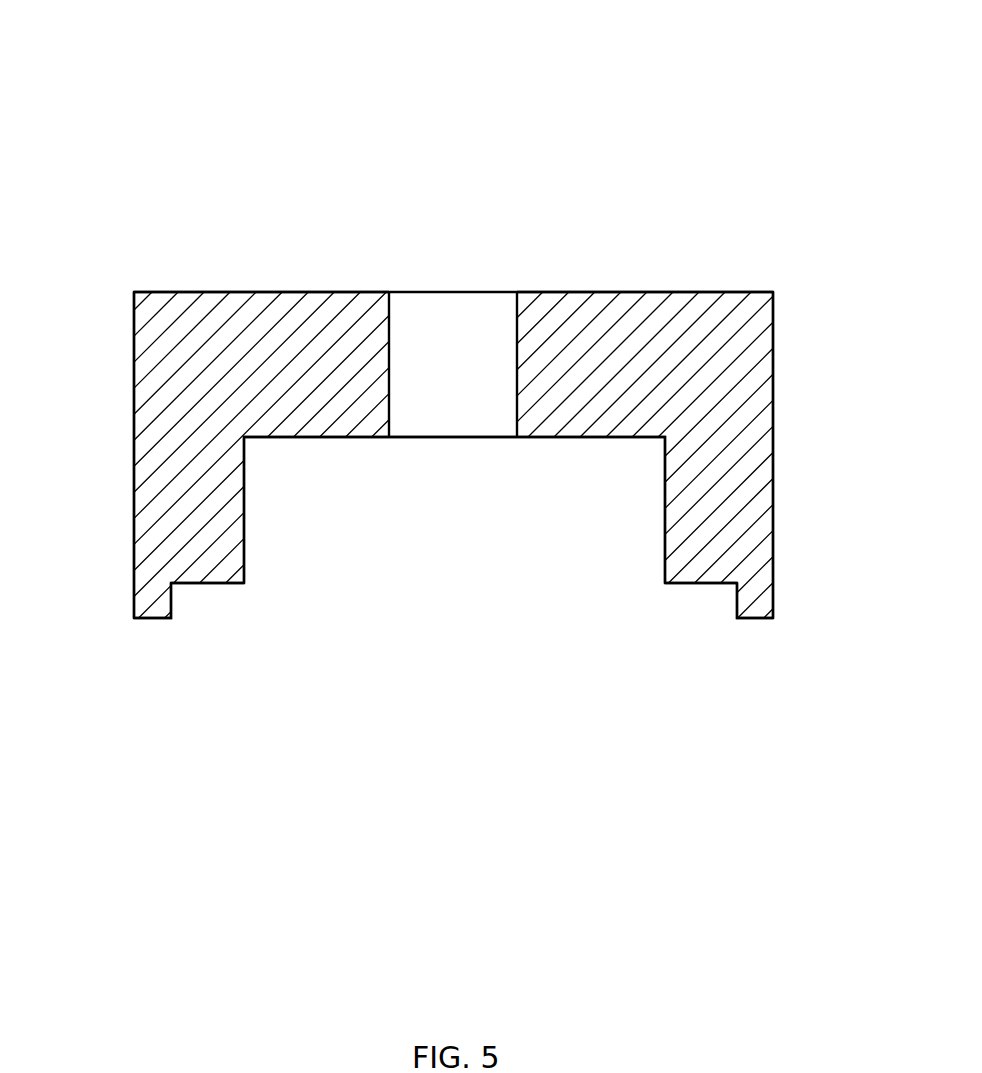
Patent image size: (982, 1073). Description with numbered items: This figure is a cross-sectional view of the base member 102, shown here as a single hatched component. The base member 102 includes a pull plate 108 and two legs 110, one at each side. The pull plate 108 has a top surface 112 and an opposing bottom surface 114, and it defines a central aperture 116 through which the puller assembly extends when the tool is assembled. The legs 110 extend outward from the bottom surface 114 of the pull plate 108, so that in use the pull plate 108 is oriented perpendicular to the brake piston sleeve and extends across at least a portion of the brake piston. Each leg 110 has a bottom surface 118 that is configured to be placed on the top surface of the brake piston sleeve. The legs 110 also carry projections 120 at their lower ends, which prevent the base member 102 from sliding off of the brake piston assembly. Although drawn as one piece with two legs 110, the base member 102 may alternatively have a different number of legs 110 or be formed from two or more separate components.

The base member 102 is at (123, 107).
The pull plate 108 is at (652, 292).
The legs 110 is at (134, 433).
The top surface 112 is at (203, 292).
The bottom surface 114 is at (283, 437).
The aperture 116 is at (457, 325).
The bottom surface of the legs 118 is at (207, 583).
The projections 120 is at (152, 620).